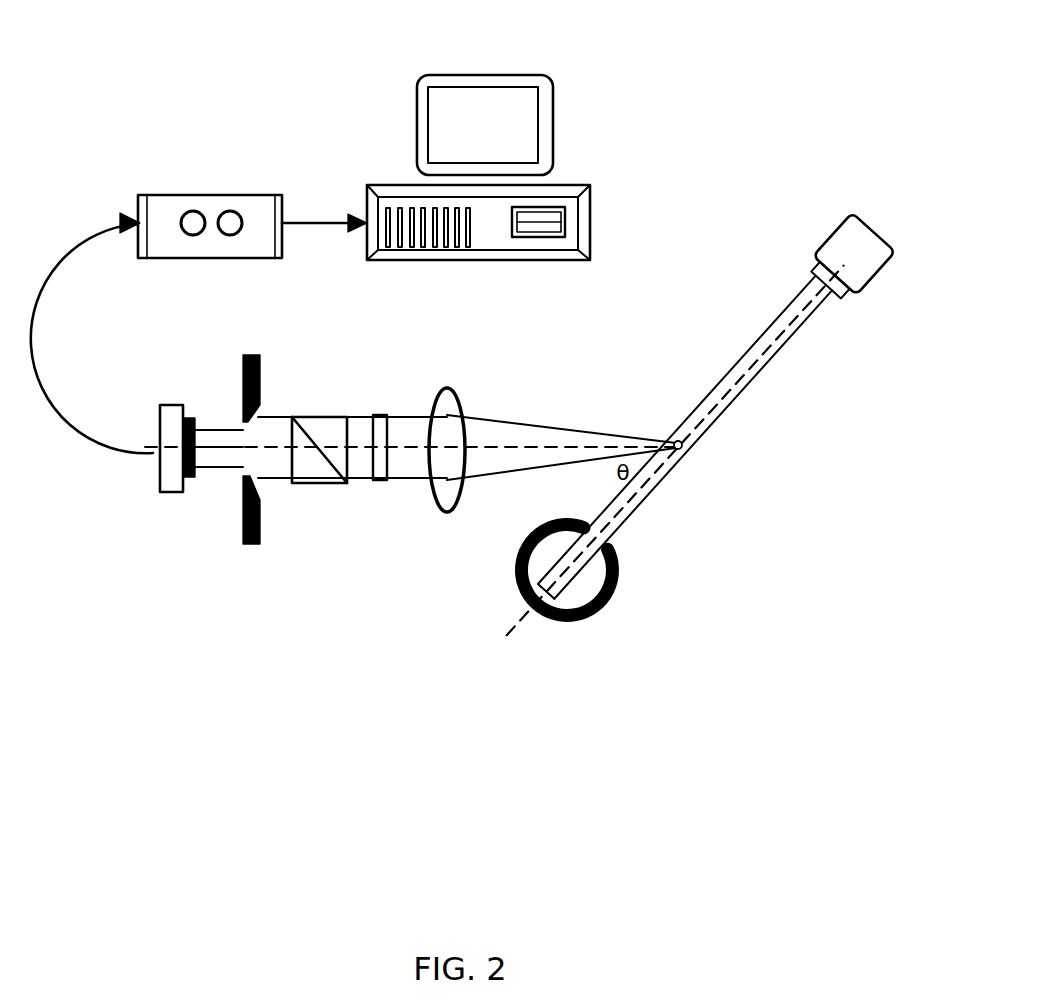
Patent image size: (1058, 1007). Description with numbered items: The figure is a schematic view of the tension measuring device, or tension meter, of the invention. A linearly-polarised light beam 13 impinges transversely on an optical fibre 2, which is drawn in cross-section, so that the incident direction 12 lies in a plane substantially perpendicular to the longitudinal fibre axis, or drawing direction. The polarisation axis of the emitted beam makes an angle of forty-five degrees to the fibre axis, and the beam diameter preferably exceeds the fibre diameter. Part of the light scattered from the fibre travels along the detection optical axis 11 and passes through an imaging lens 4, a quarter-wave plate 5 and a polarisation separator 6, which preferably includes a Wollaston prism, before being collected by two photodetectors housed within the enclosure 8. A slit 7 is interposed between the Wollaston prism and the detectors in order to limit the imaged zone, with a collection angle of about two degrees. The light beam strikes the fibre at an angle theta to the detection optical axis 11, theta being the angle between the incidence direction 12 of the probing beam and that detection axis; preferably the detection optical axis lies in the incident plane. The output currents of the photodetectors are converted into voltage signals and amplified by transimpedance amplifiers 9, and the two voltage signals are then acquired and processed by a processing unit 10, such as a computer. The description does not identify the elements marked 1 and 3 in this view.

The sample holder 1 is at (815, 252).
The optical fibre 2 is at (687, 450).
The rotary bearing 3 is at (615, 597).
The imaging lens 4 is at (444, 512).
The quarter-wave plate 5 is at (378, 480).
The polarisation separator 6 is at (309, 483).
The slit 7 is at (253, 545).
The enclosure 8 is at (169, 492).
The transimpedance amplifiers 9 is at (207, 200).
The processing unit 10 is at (485, 50).
The detection optical axis 11 is at (218, 453).
The incident direction 12 is at (763, 350).
The linearly-polarised light beam 13 is at (799, 330).